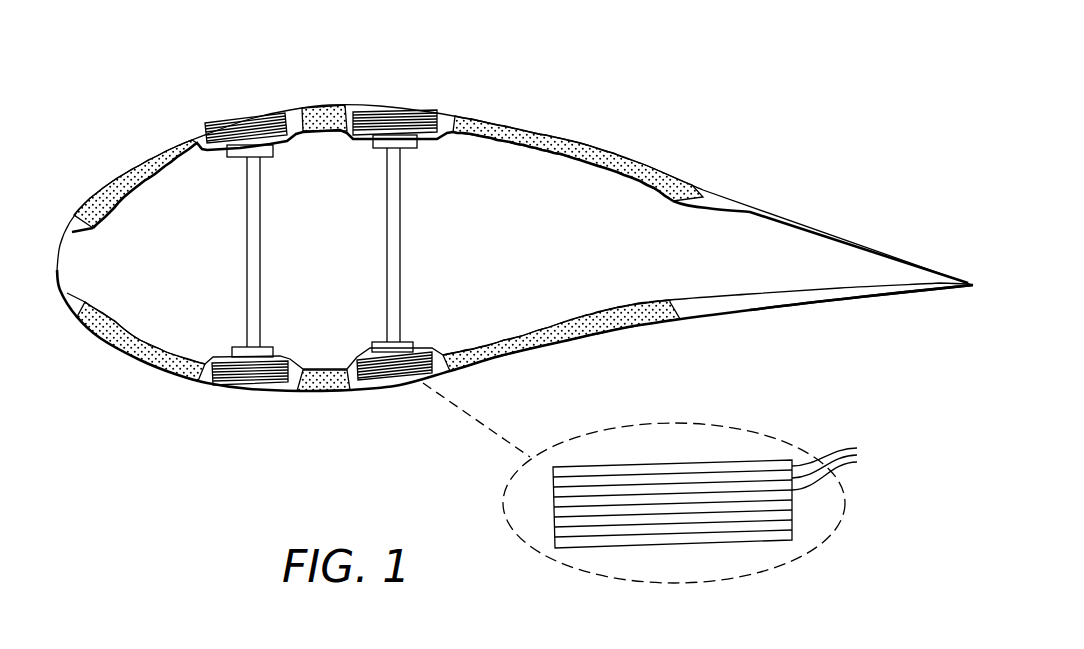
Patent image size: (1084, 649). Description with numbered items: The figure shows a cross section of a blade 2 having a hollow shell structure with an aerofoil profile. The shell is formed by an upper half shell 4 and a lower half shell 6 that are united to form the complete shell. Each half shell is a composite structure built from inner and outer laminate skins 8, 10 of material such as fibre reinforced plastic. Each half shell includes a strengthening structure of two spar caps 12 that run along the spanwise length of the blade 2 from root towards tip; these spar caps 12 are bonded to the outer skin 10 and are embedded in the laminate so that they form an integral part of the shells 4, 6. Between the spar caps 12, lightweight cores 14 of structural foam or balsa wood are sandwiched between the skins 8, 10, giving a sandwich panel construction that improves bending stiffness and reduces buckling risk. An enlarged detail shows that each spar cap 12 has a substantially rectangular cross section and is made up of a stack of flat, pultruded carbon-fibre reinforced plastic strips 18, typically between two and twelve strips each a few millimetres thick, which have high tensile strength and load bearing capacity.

The blade 2 is at (510, 66).
The upper half shell 4 is at (152, 123).
The lower half shell 6 is at (150, 382).
The inner laminate skin 8 is at (683, 184).
The outer laminate skin 10 is at (688, 209).
The spar cap 12 is at (242, 122).
The lightweight core 14 is at (120, 170).
The reinforcing strip 18 is at (657, 483).